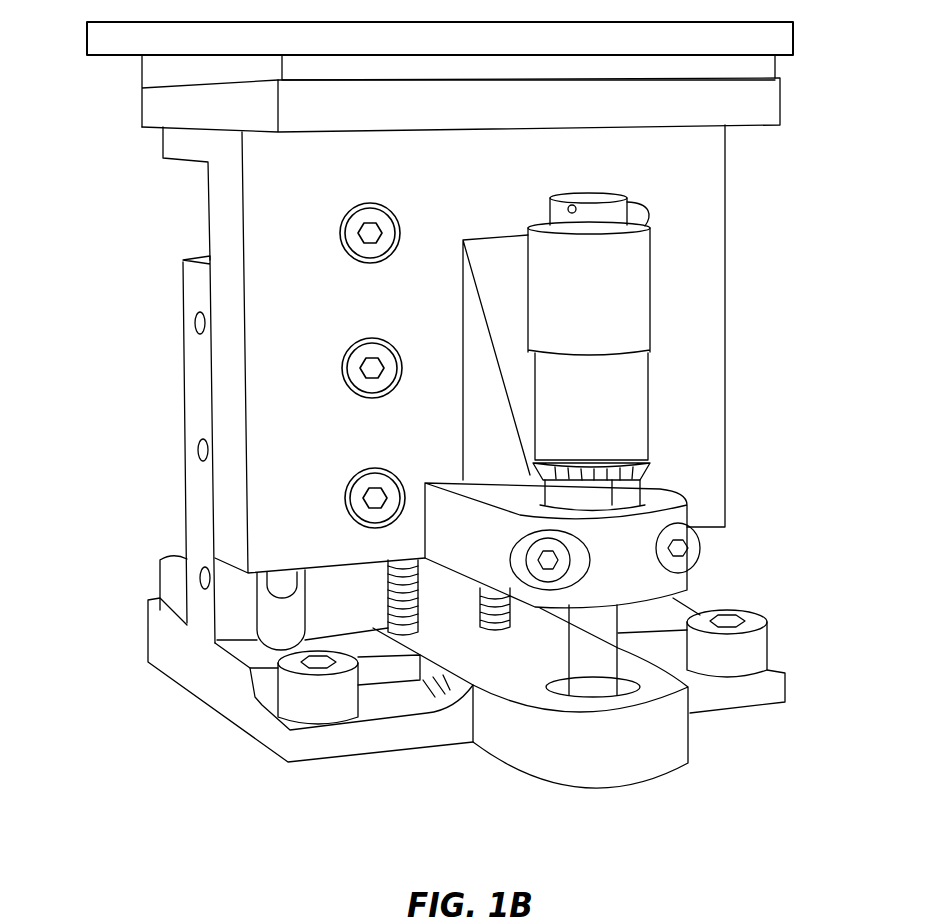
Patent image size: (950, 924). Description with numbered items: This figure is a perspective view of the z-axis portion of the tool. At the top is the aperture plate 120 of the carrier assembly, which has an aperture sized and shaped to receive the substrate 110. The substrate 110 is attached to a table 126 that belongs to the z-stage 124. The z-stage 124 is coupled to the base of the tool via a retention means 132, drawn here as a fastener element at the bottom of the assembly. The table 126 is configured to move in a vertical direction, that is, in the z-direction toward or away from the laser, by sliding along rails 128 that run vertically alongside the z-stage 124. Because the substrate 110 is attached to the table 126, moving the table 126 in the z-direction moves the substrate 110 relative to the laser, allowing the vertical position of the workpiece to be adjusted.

The substrate 110 is at (166, 70).
The aperture plate 120 is at (793, 43).
The z-stage 124 is at (692, 313).
The table 126 is at (182, 110).
The rails 128 is at (277, 613).
The retention means 132 is at (288, 697).